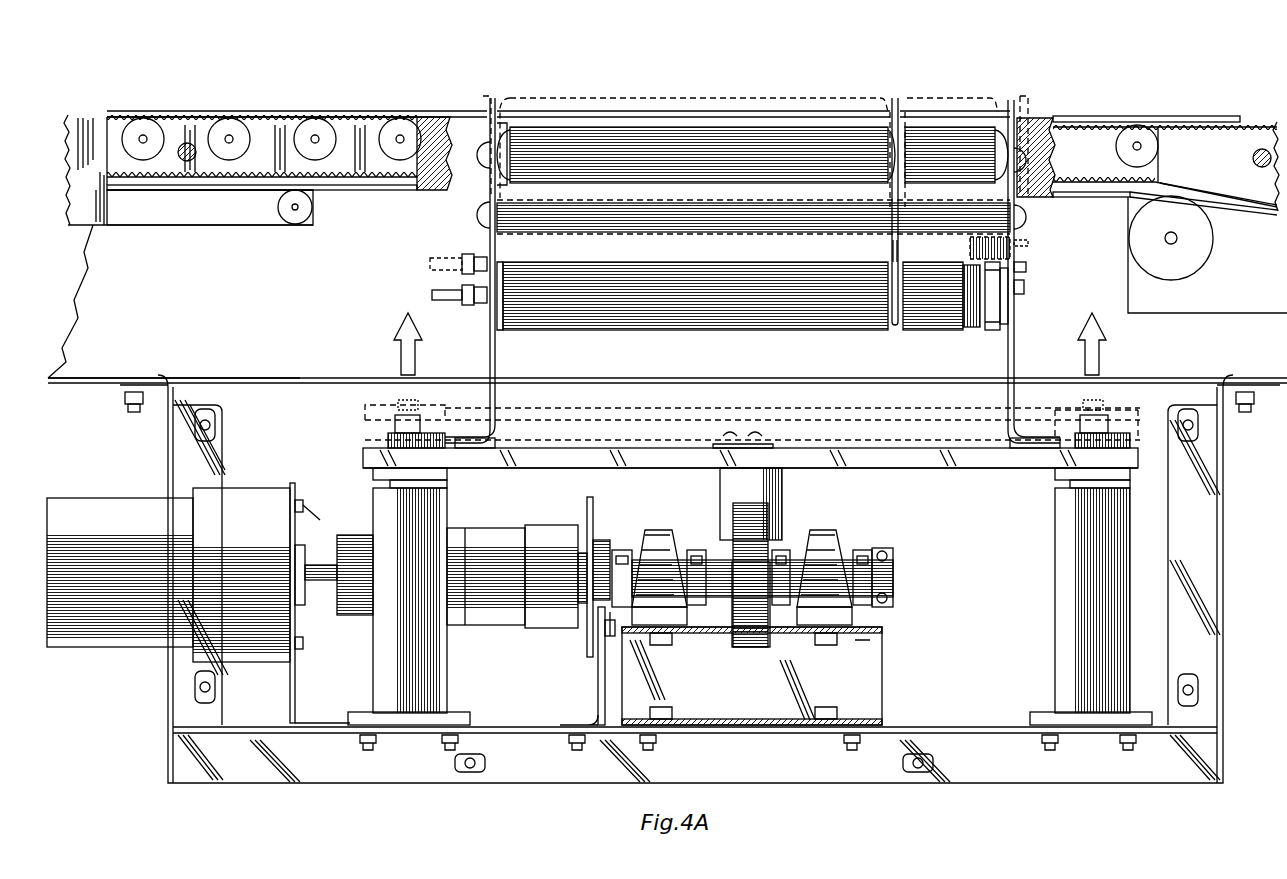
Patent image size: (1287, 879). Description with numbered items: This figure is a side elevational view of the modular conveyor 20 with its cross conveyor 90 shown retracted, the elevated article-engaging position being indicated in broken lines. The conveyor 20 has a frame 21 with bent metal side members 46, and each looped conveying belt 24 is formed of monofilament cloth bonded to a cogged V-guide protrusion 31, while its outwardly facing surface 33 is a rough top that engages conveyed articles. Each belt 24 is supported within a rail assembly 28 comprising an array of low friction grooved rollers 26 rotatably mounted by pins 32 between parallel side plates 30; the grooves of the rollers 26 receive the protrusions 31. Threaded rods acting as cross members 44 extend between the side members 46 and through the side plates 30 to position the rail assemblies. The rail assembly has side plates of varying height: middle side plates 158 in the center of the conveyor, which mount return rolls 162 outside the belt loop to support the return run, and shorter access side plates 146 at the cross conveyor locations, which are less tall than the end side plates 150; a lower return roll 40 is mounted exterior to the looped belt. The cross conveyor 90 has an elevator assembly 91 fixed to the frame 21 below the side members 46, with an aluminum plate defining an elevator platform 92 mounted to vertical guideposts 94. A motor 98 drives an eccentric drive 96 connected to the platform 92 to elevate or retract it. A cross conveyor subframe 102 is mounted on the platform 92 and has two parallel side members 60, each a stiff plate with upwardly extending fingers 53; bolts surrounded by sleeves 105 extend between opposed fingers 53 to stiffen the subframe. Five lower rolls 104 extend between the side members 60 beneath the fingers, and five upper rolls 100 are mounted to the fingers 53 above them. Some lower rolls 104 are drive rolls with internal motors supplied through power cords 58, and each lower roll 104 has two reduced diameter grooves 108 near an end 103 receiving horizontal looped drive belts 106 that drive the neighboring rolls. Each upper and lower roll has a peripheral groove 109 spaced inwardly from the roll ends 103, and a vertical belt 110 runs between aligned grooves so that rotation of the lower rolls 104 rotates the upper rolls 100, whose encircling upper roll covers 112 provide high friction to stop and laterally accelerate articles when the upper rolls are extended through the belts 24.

The modular conveyor 20 is at (682, 192).
The frame 21 is at (82, 385).
The conveying belt 24 is at (1090, 116).
The grooved roller 26 is at (400, 125).
The rail assembly 28 is at (90, 115).
The side plate 30 is at (177, 227).
The cogged V-guide protrusion 31 is at (100, 151).
The pin 32 is at (229, 135).
The outwardly facing surface 33 is at (362, 110).
The lower return roll 40 is at (1214, 240).
The cross member 44 is at (187, 143).
The side member 46 is at (256, 338).
The finger 53 is at (488, 172).
The power cord 58 is at (445, 301).
The side member 60 is at (496, 348).
The cross conveyor 90 is at (752, 235).
The elevator assembly 91 is at (1000, 470).
The elevator platform 92 is at (905, 470).
The vertical guidepost 94 is at (1075, 490).
The eccentric drive 96 is at (750, 648).
The motor 98 is at (115, 498).
The upper roll 100 is at (568, 125).
The cross conveyor subframe 102 is at (1016, 320).
The roll end 103 is at (1004, 331).
The lower roll 104 is at (640, 331).
The sleeve 105 is at (628, 233).
The drive belt 106 is at (992, 331).
The reduced diameter groove 108 is at (970, 331).
The peripheral groove 109 is at (895, 98).
The vertical belt 110 is at (890, 236).
The upper roll cover 112 is at (682, 125).
The access side plate 146 is at (430, 192).
The end side plate 150 is at (1216, 313).
The middle side plate 158 is at (240, 227).
The return roll 162 is at (295, 224).